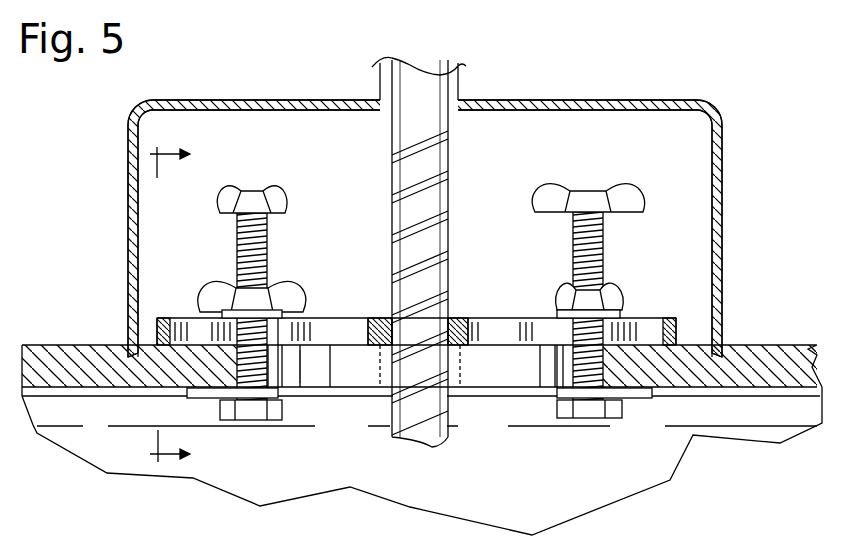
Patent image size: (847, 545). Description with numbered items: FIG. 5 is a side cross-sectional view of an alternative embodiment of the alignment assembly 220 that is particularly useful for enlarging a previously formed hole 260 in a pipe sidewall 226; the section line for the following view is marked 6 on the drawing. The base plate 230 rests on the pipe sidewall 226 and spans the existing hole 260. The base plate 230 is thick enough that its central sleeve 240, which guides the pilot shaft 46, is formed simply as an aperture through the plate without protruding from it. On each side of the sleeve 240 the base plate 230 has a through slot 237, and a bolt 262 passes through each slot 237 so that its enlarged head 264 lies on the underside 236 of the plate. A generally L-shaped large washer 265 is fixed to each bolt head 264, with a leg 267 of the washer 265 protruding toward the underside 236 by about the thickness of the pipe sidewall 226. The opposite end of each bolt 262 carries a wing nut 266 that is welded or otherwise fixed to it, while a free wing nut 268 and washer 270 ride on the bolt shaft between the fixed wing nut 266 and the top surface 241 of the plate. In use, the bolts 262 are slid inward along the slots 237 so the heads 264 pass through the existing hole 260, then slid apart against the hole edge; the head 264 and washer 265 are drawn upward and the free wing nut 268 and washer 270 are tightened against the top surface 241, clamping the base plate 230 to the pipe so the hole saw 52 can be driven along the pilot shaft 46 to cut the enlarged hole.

The pilot shaft 46 is at (450, 183).
The hole saw 52 is at (128, 182).
The alignment assembly 220 is at (683, 267).
The pipe sidewall 226 is at (74, 344).
The base plate 230 is at (672, 320).
The underside 236 is at (463, 348).
The through slot 237 is at (368, 340).
The central sleeve 240 is at (397, 317).
The top surface 241 is at (452, 318).
The previously formed hole 260 is at (380, 378).
The bolt 262 is at (238, 238).
The enlarged head 264 is at (248, 421).
The large washer 265 is at (188, 396).
The wing nut 266 is at (289, 197).
The leg 267 is at (280, 378).
The free wing nut 268 is at (203, 295).
The washer 270 is at (222, 313).
The section line 6 is at (178, 306).